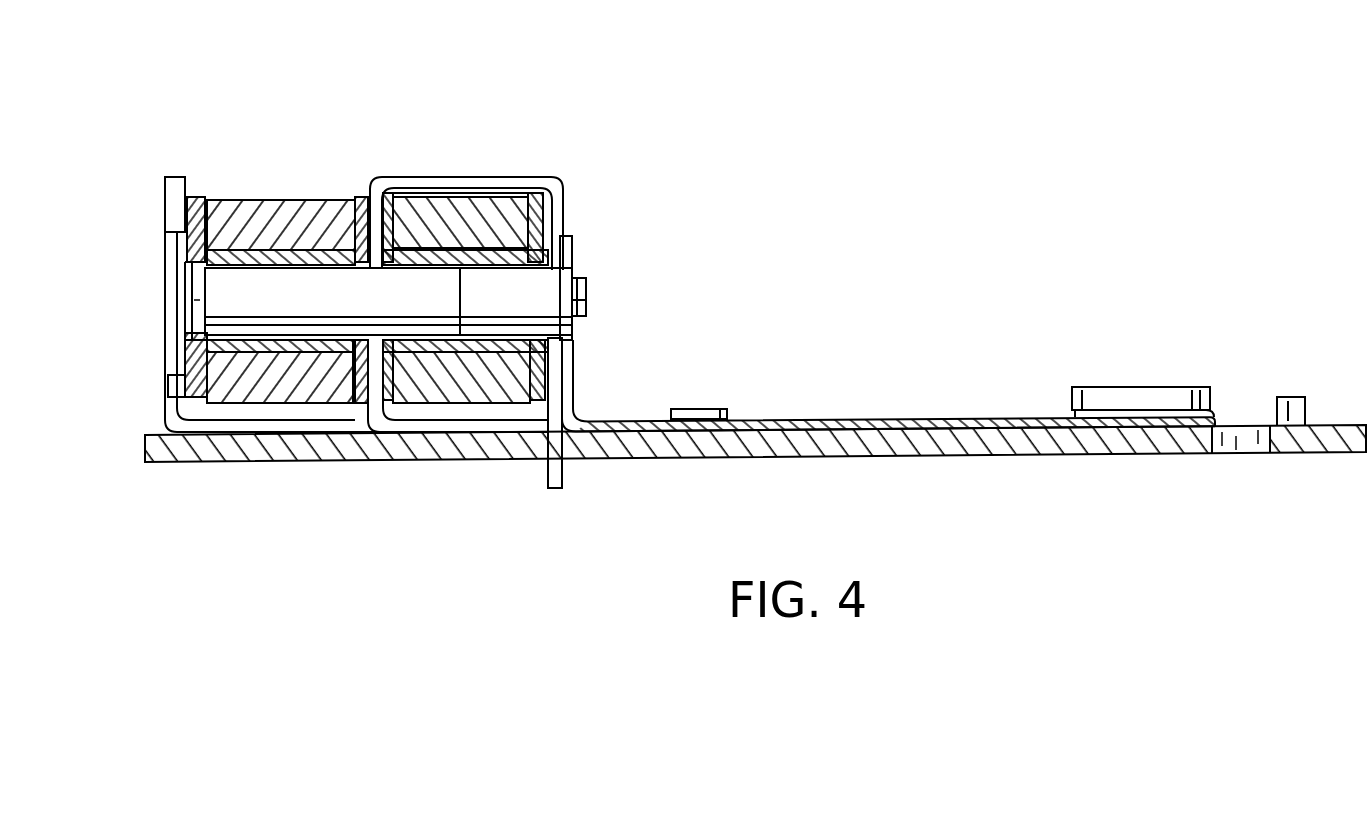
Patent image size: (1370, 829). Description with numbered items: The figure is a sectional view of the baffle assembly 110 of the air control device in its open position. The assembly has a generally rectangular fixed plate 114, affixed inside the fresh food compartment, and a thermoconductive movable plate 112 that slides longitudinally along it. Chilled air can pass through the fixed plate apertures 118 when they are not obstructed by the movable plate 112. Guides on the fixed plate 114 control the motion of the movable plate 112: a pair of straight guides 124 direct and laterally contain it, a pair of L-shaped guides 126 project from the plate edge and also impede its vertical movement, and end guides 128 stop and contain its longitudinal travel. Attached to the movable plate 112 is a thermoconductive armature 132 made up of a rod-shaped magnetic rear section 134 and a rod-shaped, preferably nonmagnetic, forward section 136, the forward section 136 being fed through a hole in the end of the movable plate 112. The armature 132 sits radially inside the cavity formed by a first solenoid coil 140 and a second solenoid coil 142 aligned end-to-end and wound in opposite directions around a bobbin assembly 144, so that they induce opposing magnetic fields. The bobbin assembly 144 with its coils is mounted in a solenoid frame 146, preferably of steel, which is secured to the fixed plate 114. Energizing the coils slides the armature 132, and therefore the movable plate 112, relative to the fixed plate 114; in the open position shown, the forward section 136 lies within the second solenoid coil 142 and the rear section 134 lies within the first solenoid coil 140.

The baffle assembly 110 is at (796, 168).
The movable plate 112 is at (872, 418).
The fixed plate 114 is at (900, 455).
The fixed plate apertures 118 is at (1248, 432).
The straight guides 124 is at (700, 409).
The guides 126 is at (1122, 388).
The end guides 128 is at (1292, 397).
The armature 132 is at (351, 345).
The rear section 134 is at (260, 305).
The forward section 136 is at (542, 285).
The first solenoid coil 140 is at (253, 200).
The second solenoid coil 142 is at (493, 226).
The bobbin assembly 144 is at (358, 195).
The solenoid frame 146 is at (468, 185).